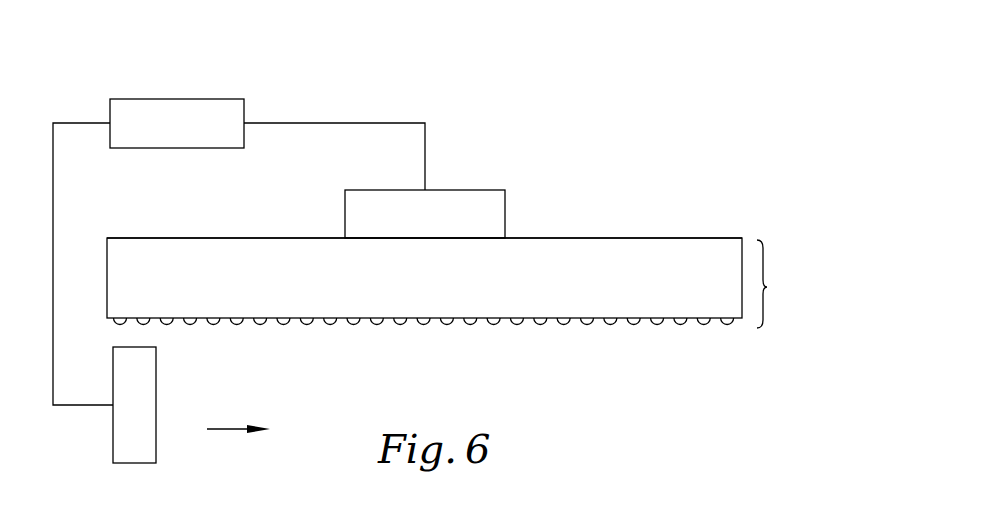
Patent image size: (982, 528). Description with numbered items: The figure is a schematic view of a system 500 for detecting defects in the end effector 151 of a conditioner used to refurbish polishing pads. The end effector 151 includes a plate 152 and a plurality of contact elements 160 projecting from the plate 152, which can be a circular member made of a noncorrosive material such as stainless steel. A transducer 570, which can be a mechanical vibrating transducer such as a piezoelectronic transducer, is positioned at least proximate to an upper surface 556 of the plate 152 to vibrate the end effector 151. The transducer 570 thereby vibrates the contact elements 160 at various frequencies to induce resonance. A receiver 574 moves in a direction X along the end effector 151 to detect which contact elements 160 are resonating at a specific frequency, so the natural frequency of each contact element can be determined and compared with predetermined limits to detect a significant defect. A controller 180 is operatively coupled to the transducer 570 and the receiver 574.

The system 500 is at (725, 72).
The controller 180 is at (148, 99).
The transducer 570 is at (457, 190).
The upper surface 556 is at (533, 238).
The plate 152 is at (643, 255).
The end effector 151 is at (767, 287).
The contact elements 160 is at (634, 325).
The receiver 574 is at (156, 372).